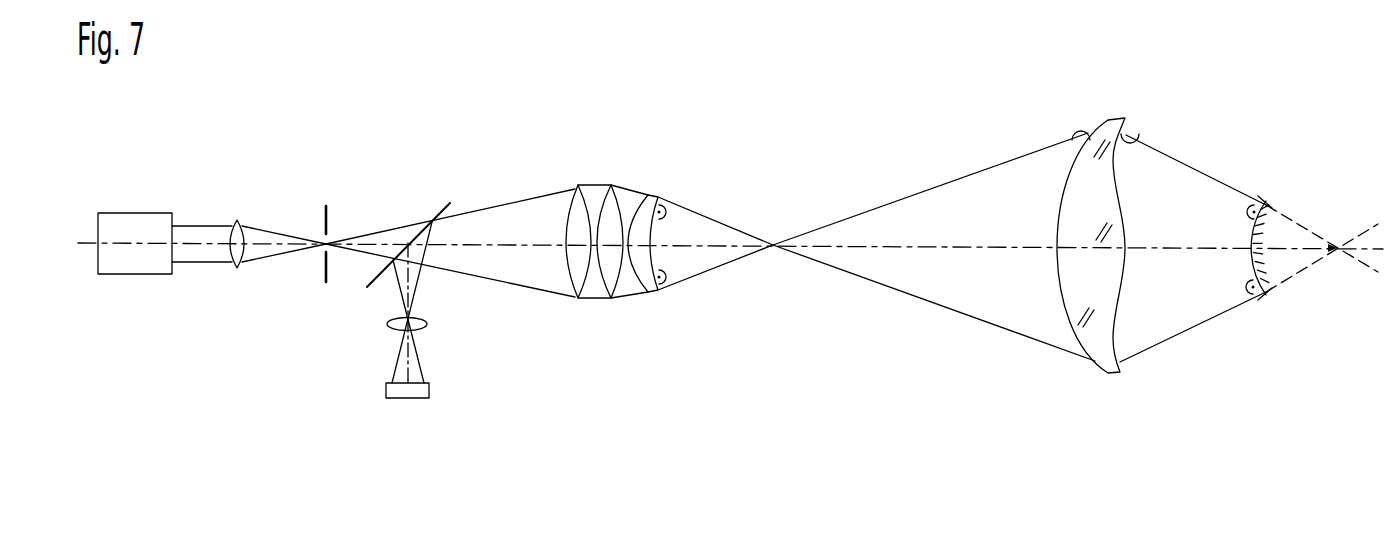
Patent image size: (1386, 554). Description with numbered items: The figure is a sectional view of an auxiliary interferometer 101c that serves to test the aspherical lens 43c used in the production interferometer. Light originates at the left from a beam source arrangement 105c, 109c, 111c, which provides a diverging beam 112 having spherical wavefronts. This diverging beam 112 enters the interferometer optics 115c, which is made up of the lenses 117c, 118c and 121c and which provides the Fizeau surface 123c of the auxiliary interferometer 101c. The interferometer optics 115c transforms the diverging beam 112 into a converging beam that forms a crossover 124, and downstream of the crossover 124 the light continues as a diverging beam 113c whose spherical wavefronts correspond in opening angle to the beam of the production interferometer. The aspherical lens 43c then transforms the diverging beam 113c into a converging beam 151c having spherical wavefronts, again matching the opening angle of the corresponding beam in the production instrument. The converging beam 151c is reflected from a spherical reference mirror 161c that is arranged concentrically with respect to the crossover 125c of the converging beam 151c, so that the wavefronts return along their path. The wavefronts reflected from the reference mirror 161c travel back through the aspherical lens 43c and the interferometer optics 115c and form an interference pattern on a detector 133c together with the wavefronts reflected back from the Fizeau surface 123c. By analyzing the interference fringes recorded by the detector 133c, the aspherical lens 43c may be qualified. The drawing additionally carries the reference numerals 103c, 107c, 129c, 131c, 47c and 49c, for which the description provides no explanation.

The auxiliary interferometer 101c is at (898, 137).
The optical axis 103c is at (87, 247).
The beam source arrangement 105c is at (135, 213).
The light beam 107c is at (208, 264).
The beam source arrangement 109c is at (237, 220).
The beam source arrangement 111c is at (330, 220).
The diverging beam 112 is at (520, 200).
The diverging beam 113c is at (987, 168).
The interferometer optics 115c is at (607, 157).
The lens 117c is at (578, 298).
The lens 118c is at (611, 298).
The lens 121c is at (653, 292).
The Fizeau surface 123c is at (665, 219).
The crossover 124 is at (777, 248).
The crossover 125c is at (1333, 252).
The beam splitter 129c is at (440, 208).
The camera lens 131c is at (427, 325).
The detector 133c is at (429, 389).
The aspherical lens 43c is at (1113, 378).
The first surface of aspherical lens 47c is at (1076, 135).
The second aspherical surface 49c is at (1135, 136).
The converging beam 151c is at (1195, 170).
The spherical reference mirror 161c is at (1265, 202).